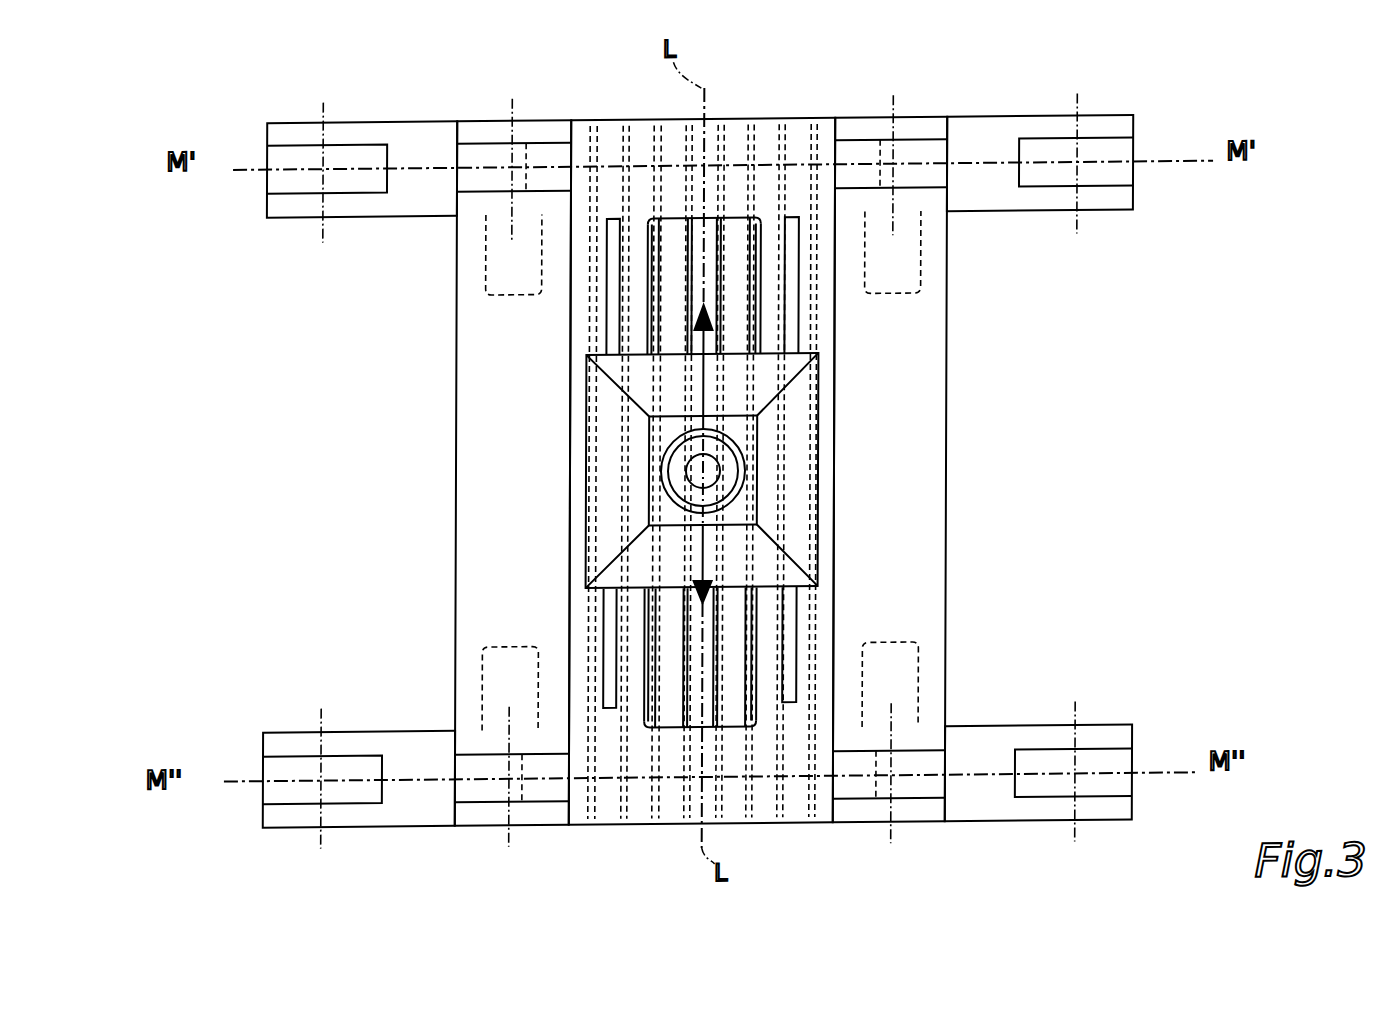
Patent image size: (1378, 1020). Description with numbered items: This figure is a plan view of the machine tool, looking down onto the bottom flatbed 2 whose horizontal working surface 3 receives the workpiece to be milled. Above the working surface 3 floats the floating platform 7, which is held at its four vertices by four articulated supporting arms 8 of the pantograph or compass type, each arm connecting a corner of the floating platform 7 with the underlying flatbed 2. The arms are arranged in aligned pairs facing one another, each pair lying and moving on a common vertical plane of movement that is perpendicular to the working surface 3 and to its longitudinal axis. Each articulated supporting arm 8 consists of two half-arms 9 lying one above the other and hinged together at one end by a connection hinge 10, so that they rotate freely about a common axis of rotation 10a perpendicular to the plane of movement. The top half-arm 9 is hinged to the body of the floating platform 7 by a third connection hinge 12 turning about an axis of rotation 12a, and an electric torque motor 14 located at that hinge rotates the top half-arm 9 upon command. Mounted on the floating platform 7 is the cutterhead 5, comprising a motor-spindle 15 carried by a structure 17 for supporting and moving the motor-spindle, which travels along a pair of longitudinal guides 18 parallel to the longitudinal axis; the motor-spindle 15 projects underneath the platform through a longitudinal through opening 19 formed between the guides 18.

The bottom flatbed 2 is at (935, 466).
The horizontal working surface 3 is at (705, 464).
The cutterhead 5 is at (620, 471).
The floating platform 7 is at (738, 140).
The articulated supporting arm 8 is at (720, 456).
The half-arm 9 is at (380, 110).
The connection hinge 10 is at (262, 148).
The common axis of rotation 10a is at (320, 224).
The third connection hinge 12 is at (540, 127).
The axis of rotation 12a is at (512, 104).
The electric motor 14 is at (488, 295).
The motor-spindle 15 is at (773, 463).
The structure for supporting and moving the motor-spindle 17 is at (593, 452).
The longitudinal guide 18 is at (608, 239).
The longitudinal through opening 19 is at (672, 236).